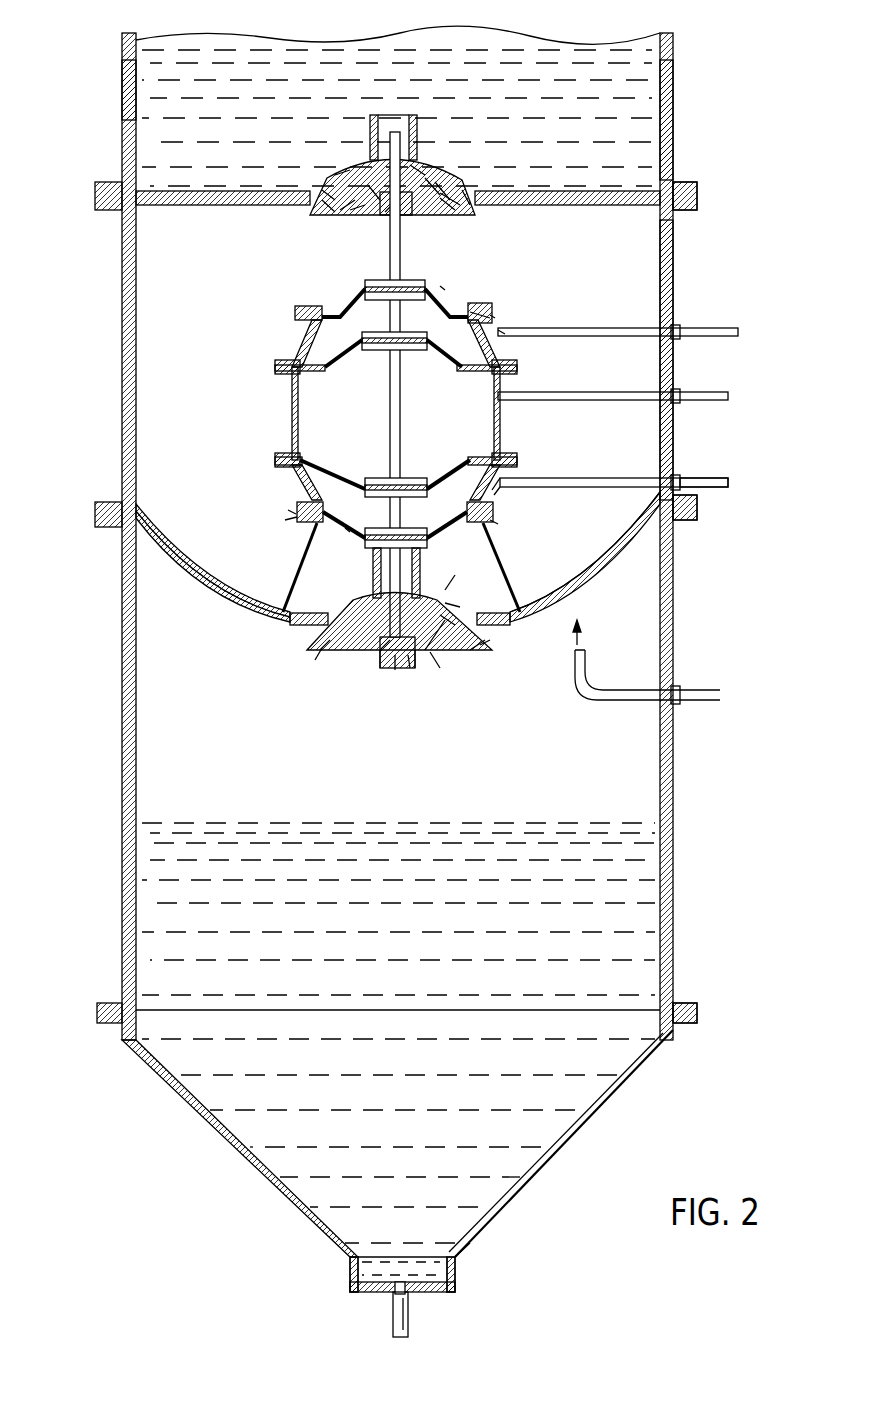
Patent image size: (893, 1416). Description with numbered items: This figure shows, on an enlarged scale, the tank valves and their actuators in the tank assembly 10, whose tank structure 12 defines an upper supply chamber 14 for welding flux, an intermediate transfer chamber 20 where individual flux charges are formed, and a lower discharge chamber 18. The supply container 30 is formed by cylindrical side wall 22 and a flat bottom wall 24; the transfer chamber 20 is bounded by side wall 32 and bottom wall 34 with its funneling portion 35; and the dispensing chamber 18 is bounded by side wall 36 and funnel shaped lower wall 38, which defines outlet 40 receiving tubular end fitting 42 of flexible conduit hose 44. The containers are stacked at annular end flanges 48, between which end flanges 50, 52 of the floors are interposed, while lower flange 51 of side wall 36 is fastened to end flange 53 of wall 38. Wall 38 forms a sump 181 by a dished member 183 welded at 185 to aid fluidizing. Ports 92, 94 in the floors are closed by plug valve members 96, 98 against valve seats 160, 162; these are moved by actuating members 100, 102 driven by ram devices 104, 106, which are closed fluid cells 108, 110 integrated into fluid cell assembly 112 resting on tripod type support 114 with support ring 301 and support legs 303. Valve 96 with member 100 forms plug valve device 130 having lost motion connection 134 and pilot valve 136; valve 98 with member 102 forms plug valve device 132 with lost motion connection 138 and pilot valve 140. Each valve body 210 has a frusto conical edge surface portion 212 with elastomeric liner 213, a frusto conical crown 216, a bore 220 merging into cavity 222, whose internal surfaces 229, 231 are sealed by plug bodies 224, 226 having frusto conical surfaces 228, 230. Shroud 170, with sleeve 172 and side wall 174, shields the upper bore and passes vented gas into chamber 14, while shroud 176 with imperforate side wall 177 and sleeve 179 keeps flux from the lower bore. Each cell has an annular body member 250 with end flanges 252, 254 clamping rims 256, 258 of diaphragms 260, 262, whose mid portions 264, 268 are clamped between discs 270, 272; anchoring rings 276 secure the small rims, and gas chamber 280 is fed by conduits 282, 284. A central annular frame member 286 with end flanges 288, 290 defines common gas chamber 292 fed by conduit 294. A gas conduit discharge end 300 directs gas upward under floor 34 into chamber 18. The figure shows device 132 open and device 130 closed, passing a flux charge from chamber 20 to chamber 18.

The tank assembly 10 is at (740, 126).
The tank structure 12 is at (675, 60).
The supply chamber 14 is at (612, 52).
The discharge chamber 18 is at (636, 797).
The transfer chamber 20 is at (670, 282).
The cylindrical side wall 22 is at (672, 120).
The bottom wall 24 is at (640, 200).
The supply container 30 is at (118, 93).
The cylindrical side wall 32 is at (675, 440).
The bottom wall 34 is at (662, 580).
The funneling portion 35 is at (190, 560).
The cylindrical side wall 36 is at (675, 878).
The funnel shaped lower wall 38 is at (600, 1105).
The outlet 40 is at (430, 1290).
The tubular end fitting 42 is at (400, 1280).
The flexible conduit hose 44 is at (410, 1318).
The annular end flanges 48 is at (692, 190).
The end flange 50 is at (698, 195).
The lower flange 51 is at (682, 1012).
The end flange 52 is at (698, 510).
The end flange 53 is at (692, 1025).
The port 92 is at (470, 210).
The port 94 is at (440, 668).
The plug valve member 96 is at (440, 180).
The plug valve member 98 is at (520, 608).
The actuating member 100 is at (390, 252).
The actuating member 102 is at (320, 622).
The ram device 104 is at (494, 301).
The ram device 106 is at (268, 517).
The closed fluid cell 108 is at (300, 328).
The closed fluid cell 110 is at (285, 520).
The fluid cell assembly 112 is at (276, 432).
The tripod type support 114 is at (265, 620).
The plug valve device 130 is at (445, 195).
The plug valve device 132 is at (302, 697).
The lost motion connection 134 is at (370, 185).
The pilot valve 136 is at (340, 210).
The lost motion connection 138 is at (425, 668).
The pilot valve 140 is at (395, 670).
The valve seat 160 is at (325, 190).
The valve seat 162 is at (315, 660).
The shroud 170 is at (375, 110).
The sleeve 172 is at (395, 115).
The side wall 174 is at (383, 108).
The shroud 176 is at (420, 570).
The imperforate side wall 177 is at (455, 575).
The sleeve 179 is at (320, 650).
The sump 181 is at (355, 1280).
The dished member 183 is at (456, 1275).
The weld 185 is at (455, 1262).
The body 210 is at (430, 175).
The frusto conical edge surface portion 212 is at (470, 185).
The liner 213 is at (325, 200).
The frusto conical crown 216 is at (375, 170).
The bore 220 is at (418, 165).
The frusto conical cavity 222 is at (405, 215).
The plug body 224 is at (385, 212).
The plug body 226 is at (410, 668).
The frusto conical surface 228 is at (445, 190).
The internal frusto-conical surface 229 is at (350, 210).
The frusto conical surface 230 is at (380, 668).
The internal frusto-conical surface 231 is at (443, 620).
The annular body member 250 is at (500, 333).
The end flange 252 is at (298, 312).
The end flange 254 is at (280, 368).
The rim 256 is at (495, 312).
The rim 258 is at (520, 370).
The diaphragm 260 is at (445, 285).
The diaphragm 262 is at (450, 352).
The mid portion 264 is at (365, 283).
The mid portion 268 is at (365, 345).
The disc 270 is at (428, 284).
The disc 272 is at (365, 338).
The anchoring ring 276 is at (495, 310).
The gas chamber 280 is at (290, 355).
The conduit 282 is at (675, 330).
The conduit 284 is at (675, 480).
The annular frame member 286 is at (292, 400).
The end flange 288 is at (292, 390).
The end flange 290 is at (295, 460).
The common gas chamber 292 is at (500, 412).
The conduit 294 is at (675, 393).
The discharge end 300 is at (585, 655).
The support ring 301 is at (500, 525).
The support legs 303 is at (540, 610).